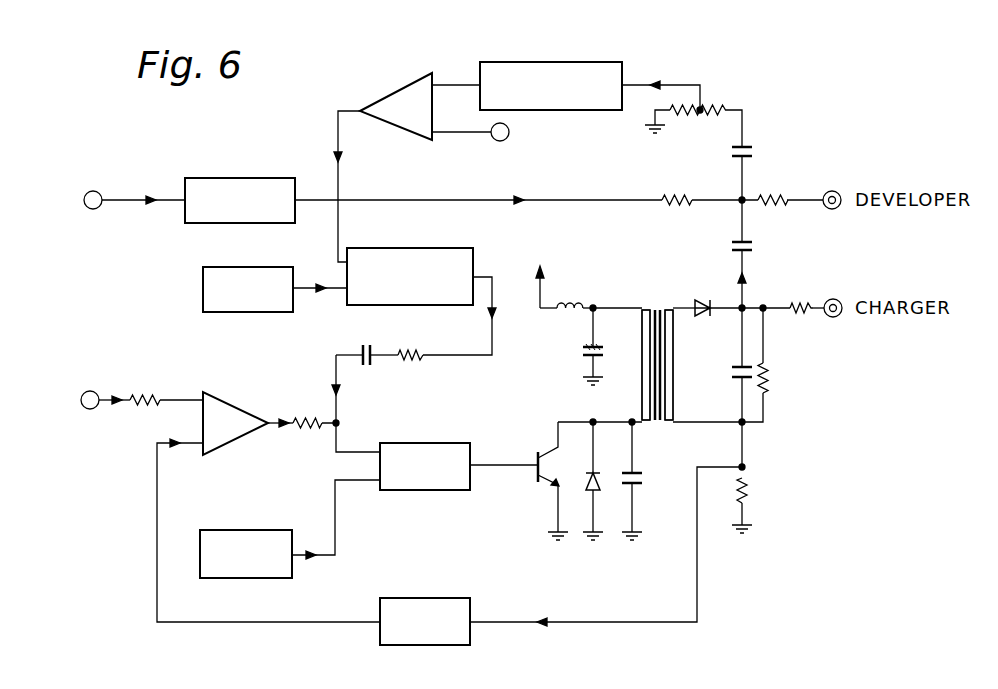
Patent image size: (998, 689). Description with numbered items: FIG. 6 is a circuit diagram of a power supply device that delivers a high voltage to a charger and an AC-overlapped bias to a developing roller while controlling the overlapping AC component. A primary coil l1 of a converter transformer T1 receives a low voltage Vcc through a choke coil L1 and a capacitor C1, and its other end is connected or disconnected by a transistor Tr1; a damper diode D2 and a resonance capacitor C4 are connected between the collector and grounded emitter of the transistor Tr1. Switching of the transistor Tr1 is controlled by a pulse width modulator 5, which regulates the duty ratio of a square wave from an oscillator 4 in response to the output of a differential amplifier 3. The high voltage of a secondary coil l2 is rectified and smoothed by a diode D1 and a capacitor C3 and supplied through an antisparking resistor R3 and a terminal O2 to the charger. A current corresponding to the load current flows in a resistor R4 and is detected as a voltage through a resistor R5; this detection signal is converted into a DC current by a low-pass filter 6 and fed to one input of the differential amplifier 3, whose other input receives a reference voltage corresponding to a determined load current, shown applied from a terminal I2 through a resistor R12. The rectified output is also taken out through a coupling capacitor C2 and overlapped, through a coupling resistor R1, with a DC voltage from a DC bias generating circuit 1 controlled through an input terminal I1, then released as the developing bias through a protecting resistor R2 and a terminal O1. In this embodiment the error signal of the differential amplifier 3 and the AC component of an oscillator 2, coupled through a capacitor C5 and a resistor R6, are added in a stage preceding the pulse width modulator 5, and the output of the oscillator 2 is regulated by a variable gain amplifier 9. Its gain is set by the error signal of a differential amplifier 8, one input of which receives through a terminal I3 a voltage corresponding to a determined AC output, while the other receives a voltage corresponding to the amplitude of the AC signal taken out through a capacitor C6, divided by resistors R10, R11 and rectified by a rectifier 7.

The DC bias generating circuit 1 is at (240, 178).
The oscillator 2 is at (246, 267).
The differential amplifier 3 is at (236, 402).
The oscillator 4 is at (245, 530).
The pulse width modulator 5 is at (422, 443).
The low-pass filter 6 is at (425, 598).
The rectifier 7 is at (575, 62).
The differential amplifier 8 is at (395, 95).
The variable gain amplifier 9 is at (401, 248).
The input terminal I1 is at (94, 191).
The input terminal I2 is at (93, 391).
The terminal I3 is at (506, 139).
The terminal O1 is at (834, 192).
The terminal O2 is at (835, 300).
The coupling resistor R1 is at (666, 195).
The protecting resistor R2 is at (779, 194).
The antisparking resistor R3 is at (795, 303).
The resistor R4 is at (772, 387).
The resistor R5 is at (753, 493).
The resistor R6 is at (413, 345).
The resistor R10 is at (721, 101).
The resistor R11 is at (678, 116).
The resistor R12 is at (299, 430).
The capacitor C1 is at (581, 352).
The coupling capacitor C2 is at (755, 247).
The capacitor C3 is at (731, 377).
The resonance capacitor C4 is at (645, 480).
The capacitor C5 is at (370, 344).
The capacitor C6 is at (749, 150).
The choke coil L1 is at (570, 306).
The converter transformer T1 is at (652, 297).
The primary coil l1 is at (641, 366).
The secondary coil l2 is at (673, 365).
The diode D1 is at (699, 297).
The damper diode D2 is at (605, 482).
The transistor Tr1 is at (545, 487).
The low voltage Vcc is at (535, 275).